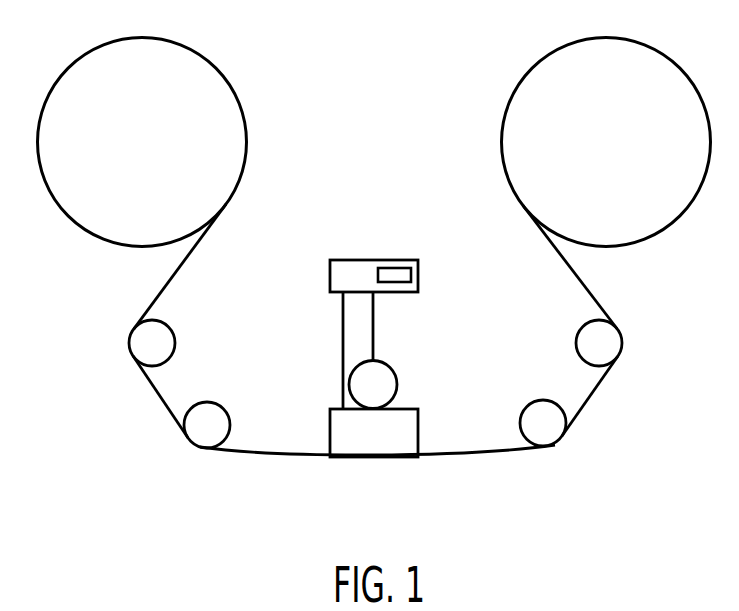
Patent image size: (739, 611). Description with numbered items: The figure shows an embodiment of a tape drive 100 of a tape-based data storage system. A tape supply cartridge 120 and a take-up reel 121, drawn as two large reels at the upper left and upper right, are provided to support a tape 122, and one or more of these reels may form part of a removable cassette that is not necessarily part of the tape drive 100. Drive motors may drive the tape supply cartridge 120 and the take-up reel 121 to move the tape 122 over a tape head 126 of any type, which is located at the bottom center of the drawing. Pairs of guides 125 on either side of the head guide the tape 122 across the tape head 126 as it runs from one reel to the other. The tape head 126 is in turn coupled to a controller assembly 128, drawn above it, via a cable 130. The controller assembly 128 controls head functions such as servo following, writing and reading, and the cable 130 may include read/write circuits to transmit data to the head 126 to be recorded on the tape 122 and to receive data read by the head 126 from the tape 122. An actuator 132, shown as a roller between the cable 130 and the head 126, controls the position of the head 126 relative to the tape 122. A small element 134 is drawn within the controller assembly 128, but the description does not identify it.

The tape drive 100 is at (124, 304).
The tape supply cartridge 120 is at (247, 117).
The take-up reel 121 is at (660, 233).
The tape 122 is at (273, 458).
The guides 125 is at (205, 402).
The tape head 126 is at (420, 438).
The controller assembly 128 is at (357, 260).
The cable 130 is at (343, 362).
The actuator 132 is at (393, 370).
The head element 134 is at (400, 262).